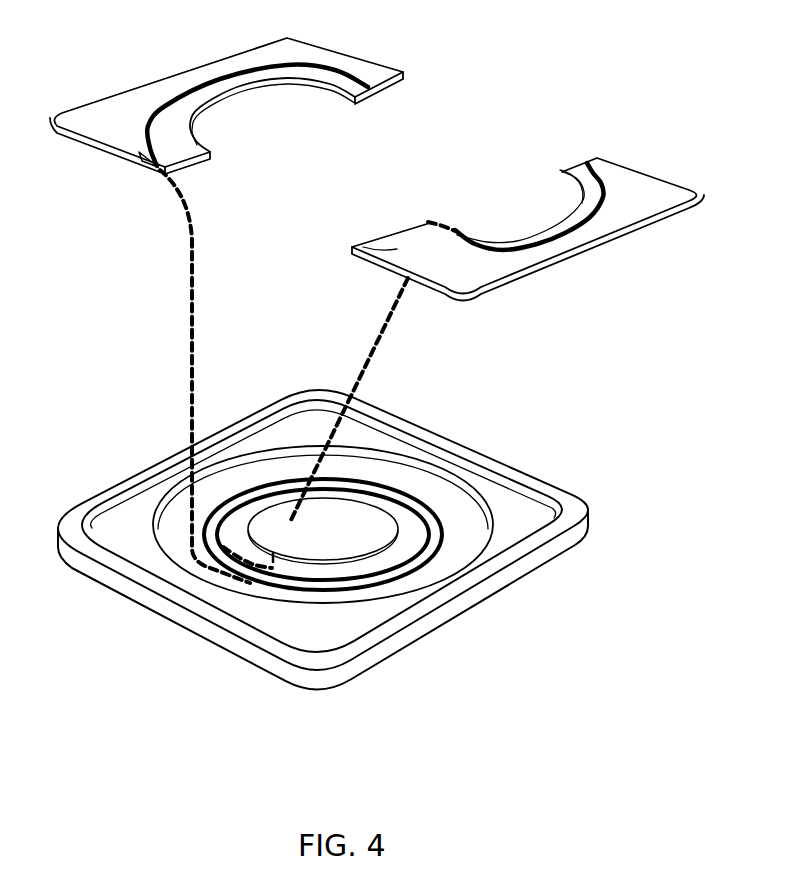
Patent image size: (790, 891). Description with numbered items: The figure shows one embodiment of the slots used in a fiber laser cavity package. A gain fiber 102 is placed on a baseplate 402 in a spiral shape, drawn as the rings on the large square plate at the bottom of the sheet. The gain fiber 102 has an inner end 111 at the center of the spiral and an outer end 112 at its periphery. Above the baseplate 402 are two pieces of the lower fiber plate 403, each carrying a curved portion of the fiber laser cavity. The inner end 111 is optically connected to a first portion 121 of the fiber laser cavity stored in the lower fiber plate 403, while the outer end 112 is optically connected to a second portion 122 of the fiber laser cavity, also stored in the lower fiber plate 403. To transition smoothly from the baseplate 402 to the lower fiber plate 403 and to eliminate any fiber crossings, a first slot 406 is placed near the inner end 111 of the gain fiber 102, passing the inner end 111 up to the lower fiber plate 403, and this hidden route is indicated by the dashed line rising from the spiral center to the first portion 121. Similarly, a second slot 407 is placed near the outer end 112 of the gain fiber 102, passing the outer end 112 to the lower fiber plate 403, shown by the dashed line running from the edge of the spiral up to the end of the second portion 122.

The lower fiber plate 403 is at (191, 71).
The second portion of the fiber laser cavity 122 is at (148, 130).
The second slot 407 is at (141, 155).
The first portion of the fiber laser cavity 121 is at (603, 193).
The first slot 406 is at (433, 220).
The baseplate 402 is at (584, 506).
The gain fiber 102 is at (462, 543).
The inner end 111 is at (252, 563).
The outer end 112 is at (207, 567).